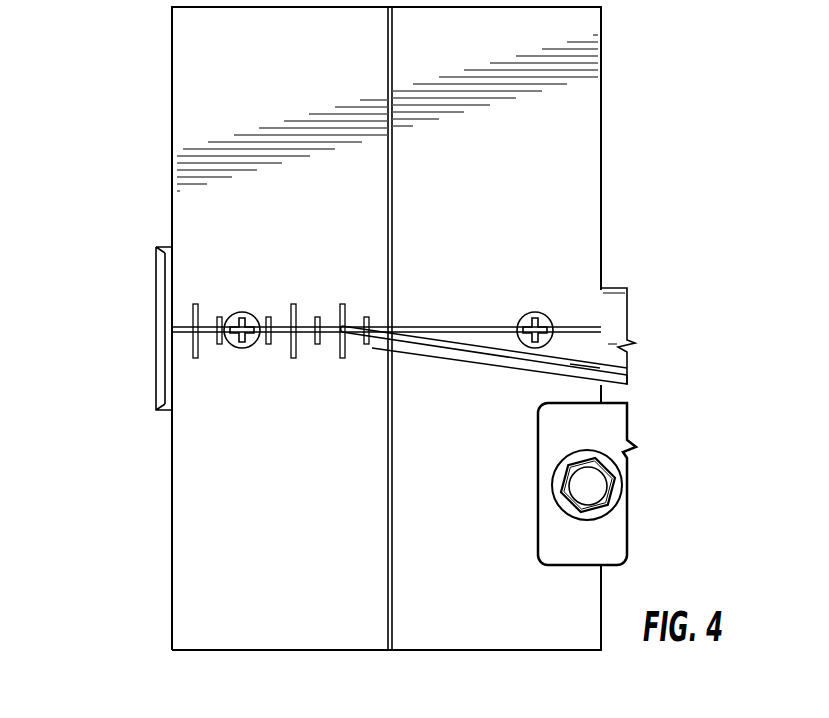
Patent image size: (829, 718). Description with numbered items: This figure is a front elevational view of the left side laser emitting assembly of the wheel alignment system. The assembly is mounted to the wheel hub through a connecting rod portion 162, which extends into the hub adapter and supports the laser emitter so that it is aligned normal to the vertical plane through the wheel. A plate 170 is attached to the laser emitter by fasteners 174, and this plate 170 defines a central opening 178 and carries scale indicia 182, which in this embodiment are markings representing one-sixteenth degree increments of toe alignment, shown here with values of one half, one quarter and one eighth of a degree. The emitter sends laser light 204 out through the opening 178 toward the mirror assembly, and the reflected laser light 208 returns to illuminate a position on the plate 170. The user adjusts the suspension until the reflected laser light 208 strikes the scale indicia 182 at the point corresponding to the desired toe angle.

The plate 170 is at (582, 128).
The scale indicia 182 is at (226, 236).
The fasteners 174 is at (240, 348).
The central opening 178 is at (398, 329).
The reflected laser light 208 is at (497, 357).
The connecting rod portion 162 is at (617, 307).
The laser light 204 is at (590, 352).